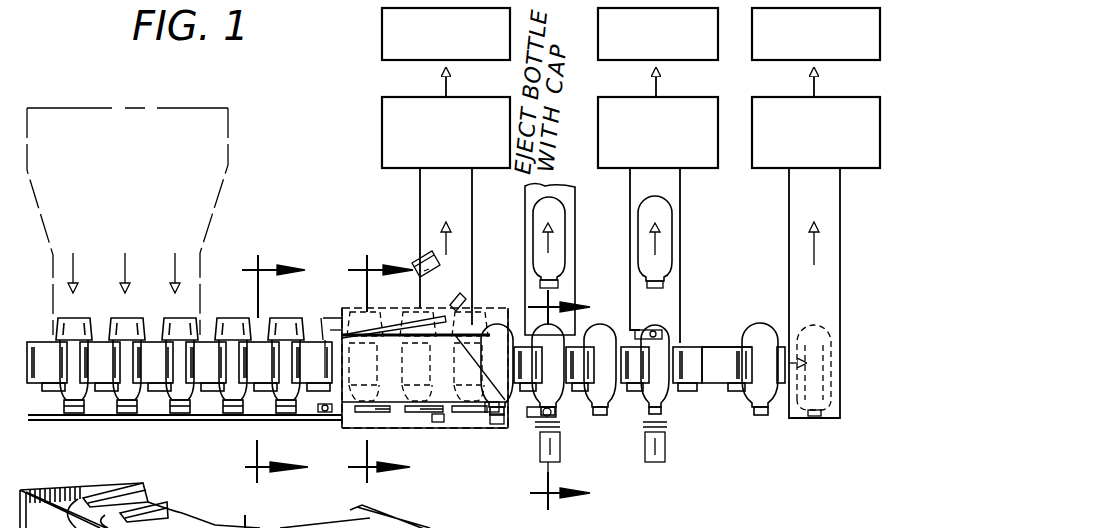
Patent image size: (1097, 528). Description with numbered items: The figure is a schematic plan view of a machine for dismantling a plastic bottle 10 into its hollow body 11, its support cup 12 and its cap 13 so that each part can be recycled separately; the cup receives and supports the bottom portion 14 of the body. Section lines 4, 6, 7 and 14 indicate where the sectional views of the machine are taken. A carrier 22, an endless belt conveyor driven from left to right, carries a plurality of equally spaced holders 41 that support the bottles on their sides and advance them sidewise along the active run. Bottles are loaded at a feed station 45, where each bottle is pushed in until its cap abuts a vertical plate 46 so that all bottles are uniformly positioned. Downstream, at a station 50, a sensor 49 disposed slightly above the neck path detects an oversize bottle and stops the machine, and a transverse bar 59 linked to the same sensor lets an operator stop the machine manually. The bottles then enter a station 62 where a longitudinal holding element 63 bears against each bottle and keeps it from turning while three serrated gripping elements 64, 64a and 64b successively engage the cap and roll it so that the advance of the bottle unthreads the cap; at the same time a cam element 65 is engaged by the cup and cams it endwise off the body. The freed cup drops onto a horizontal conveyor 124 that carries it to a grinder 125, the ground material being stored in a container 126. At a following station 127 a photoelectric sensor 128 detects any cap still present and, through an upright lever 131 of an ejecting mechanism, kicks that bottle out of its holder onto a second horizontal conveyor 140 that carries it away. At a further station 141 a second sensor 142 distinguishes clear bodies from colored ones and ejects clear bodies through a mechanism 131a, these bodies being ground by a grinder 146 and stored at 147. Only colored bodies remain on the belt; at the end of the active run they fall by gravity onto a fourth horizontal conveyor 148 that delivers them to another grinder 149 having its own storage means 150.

The section line 4 is at (259, 369).
The section line 6 is at (366, 372).
The section line 7 is at (249, 507).
The plastic bottle 10 is at (86, 398).
The hollow body 11 is at (673, 250).
The support cup 12 is at (127, 322).
The cap 13 is at (77, 415).
The bottom portion 14 is at (542, 402).
The carrier 22 is at (712, 390).
The holders 41 is at (96, 354).
The loading station 45 is at (86, 108).
The vertical plate 46 is at (163, 416).
The sensor 49 is at (337, 416).
The sensing station 50 is at (318, 303).
The transverse bar 59 is at (287, 527).
The operating station 62 is at (403, 307).
The holding element 63 is at (455, 325).
The gripping element 64 is at (373, 415).
The gripping element 64a is at (420, 413).
The gripping element 64b is at (465, 415).
The cam element 65 is at (358, 313).
The horizontal conveyor 124 is at (420, 203).
The grinder 125 is at (382, 122).
The container 126 is at (382, 56).
The cap detection station 127 is at (568, 460).
The photoelectric sensor 128 is at (557, 416).
The upright lever 131 is at (560, 446).
The ejecting mechanism 131a is at (666, 448).
The second horizontal conveyor 140 is at (562, 237).
The color sensing station 141 is at (670, 458).
The second sensor 142 is at (660, 330).
The grinder 146 is at (692, 170).
The storage 147 is at (683, 58).
The fourth horizontal conveyor 148 is at (833, 283).
The grinder 149 is at (860, 168).
The storage means 150 is at (852, 58).